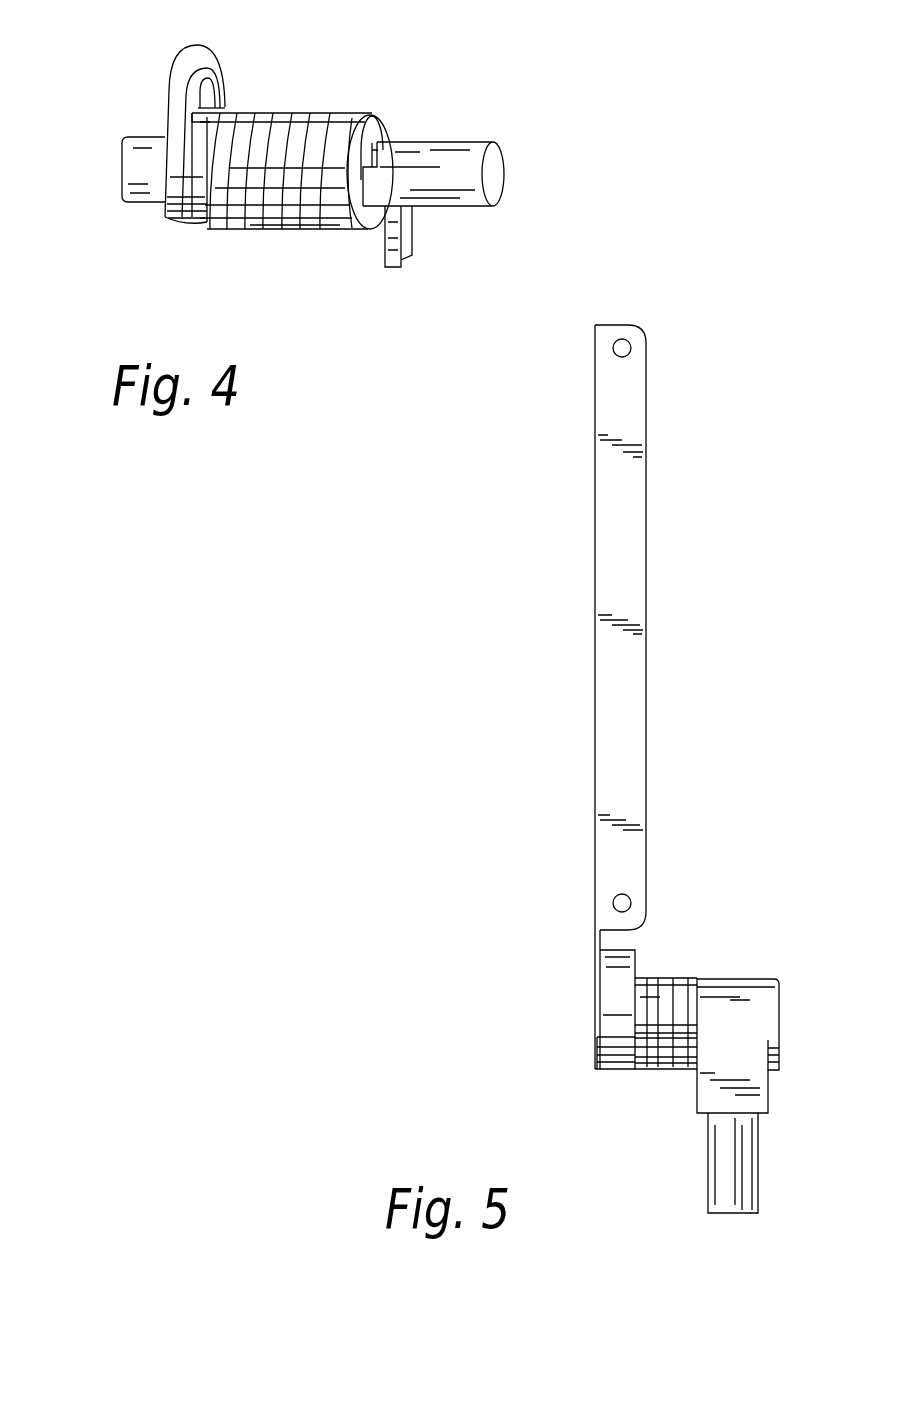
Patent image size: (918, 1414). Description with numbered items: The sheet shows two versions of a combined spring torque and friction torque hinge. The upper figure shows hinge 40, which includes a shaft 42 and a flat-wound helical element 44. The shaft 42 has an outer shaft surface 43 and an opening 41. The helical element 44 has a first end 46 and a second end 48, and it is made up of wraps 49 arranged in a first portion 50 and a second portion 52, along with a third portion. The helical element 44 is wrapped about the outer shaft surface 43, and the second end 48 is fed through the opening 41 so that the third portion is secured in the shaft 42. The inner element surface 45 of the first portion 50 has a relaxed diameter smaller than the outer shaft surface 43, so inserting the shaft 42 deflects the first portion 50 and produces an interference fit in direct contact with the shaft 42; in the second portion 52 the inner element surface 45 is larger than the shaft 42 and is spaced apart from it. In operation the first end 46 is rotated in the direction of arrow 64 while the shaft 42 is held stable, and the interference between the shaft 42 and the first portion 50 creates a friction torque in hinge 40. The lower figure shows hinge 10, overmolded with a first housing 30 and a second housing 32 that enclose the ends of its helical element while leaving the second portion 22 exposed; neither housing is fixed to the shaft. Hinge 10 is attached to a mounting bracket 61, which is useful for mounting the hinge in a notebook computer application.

In FIG. 5, the combined spring torque and friction torque hinge 10 is at (780, 1017).
In FIG. 5, the second portion 22 is at (660, 978).
In FIG. 5, the first housing 30 is at (613, 1071).
In FIG. 5, the second housing 32 is at (768, 1114).
In FIG. 4, the combined spring torque and friction torque hinge 40 is at (108, 188).
In FIG. 4, the opening 41 is at (380, 167).
In FIG. 4, the shaft 42 is at (497, 166).
In FIG. 4, the outer shaft surface 43 is at (423, 143).
In FIG. 4, the helical element 44 is at (287, 110).
In FIG. 4, the inner element surface 45 is at (207, 90).
In FIG. 4, the first end 46 is at (180, 53).
In FIG. 4, the second end 48 is at (412, 228).
In FIG. 4, the wraps 49 is at (343, 113).
In FIG. 4, the first portion 50 is at (187, 222).
In FIG. 4, the second portion 52 is at (280, 227).
In FIG. 5, the mounting bracket 61 is at (594, 683).
In FIG. 4, the arrow 64 is at (97, 97).